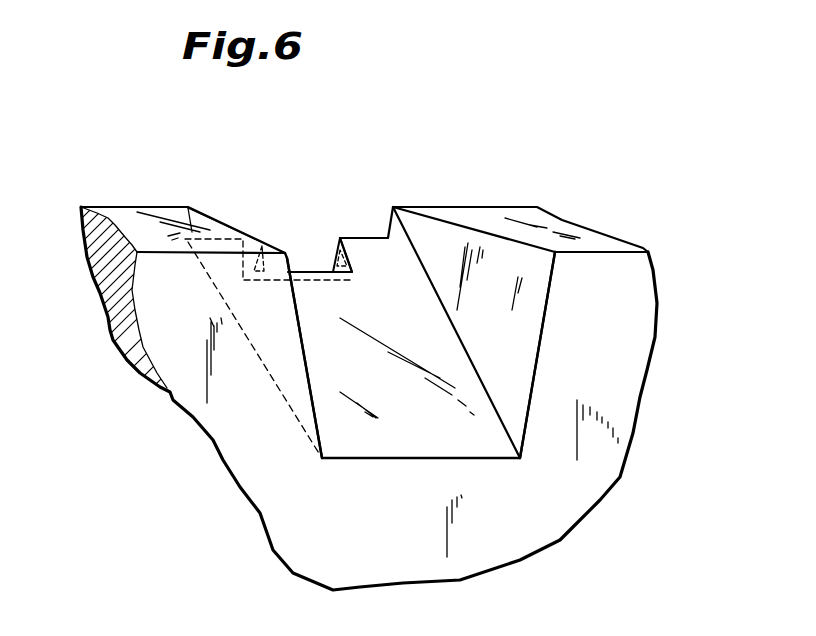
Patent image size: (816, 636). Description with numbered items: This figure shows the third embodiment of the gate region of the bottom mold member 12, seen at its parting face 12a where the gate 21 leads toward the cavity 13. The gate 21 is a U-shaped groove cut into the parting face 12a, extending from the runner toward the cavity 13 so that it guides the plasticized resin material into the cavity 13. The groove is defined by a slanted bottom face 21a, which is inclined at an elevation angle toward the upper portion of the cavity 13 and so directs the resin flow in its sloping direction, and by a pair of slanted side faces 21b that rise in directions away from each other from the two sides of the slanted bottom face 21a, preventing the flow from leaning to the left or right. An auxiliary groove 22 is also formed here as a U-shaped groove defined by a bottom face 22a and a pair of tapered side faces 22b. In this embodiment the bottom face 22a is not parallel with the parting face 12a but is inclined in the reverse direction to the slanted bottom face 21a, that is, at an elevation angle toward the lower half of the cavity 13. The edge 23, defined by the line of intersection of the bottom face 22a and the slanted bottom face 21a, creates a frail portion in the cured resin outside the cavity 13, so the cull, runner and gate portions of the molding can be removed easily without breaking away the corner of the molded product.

The bottom mold member 12 is at (660, 270).
The parting face 12a is at (593, 240).
The cavity 13 is at (388, 85).
The gate 21 is at (383, 465).
The slanted bottom face 21a is at (389, 335).
The slanted side faces 21b is at (300, 330).
The auxiliary groove 22 is at (353, 225).
The bottom face 22a is at (313, 280).
The tapered side faces 22b is at (263, 243).
The edge 23 is at (297, 271).